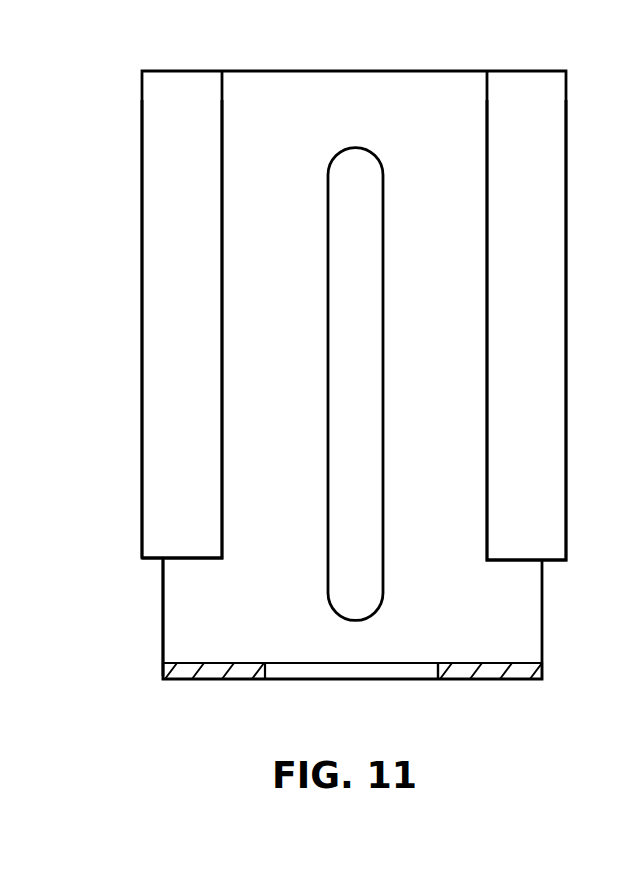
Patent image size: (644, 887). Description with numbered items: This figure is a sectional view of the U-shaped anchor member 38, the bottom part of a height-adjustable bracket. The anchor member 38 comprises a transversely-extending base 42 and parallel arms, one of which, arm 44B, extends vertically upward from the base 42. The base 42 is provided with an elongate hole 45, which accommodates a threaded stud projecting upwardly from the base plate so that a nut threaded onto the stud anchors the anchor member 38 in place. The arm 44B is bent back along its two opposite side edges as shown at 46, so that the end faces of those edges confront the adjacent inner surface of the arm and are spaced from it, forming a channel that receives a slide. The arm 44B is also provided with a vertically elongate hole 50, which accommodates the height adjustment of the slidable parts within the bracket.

The connector housing 38 is at (131, 306).
The slot 50 is at (335, 452).
The legs 46 is at (142, 461).
The step wall 44B is at (184, 594).
The base strip 42 is at (202, 663).
The central opening 45 is at (387, 671).